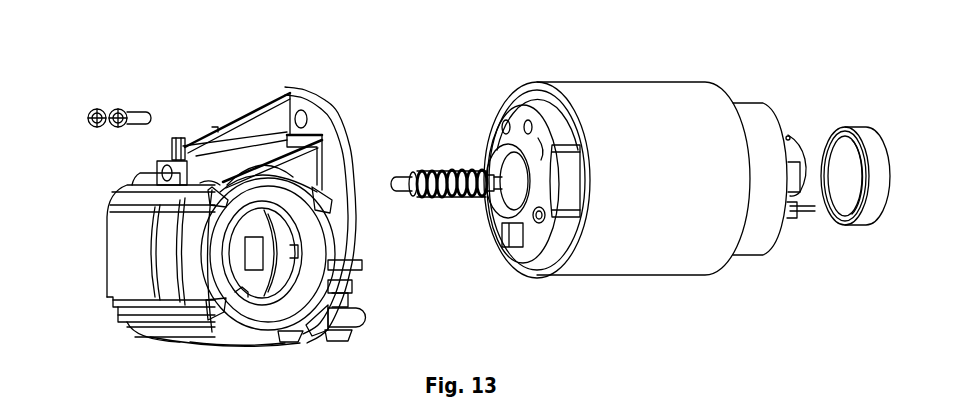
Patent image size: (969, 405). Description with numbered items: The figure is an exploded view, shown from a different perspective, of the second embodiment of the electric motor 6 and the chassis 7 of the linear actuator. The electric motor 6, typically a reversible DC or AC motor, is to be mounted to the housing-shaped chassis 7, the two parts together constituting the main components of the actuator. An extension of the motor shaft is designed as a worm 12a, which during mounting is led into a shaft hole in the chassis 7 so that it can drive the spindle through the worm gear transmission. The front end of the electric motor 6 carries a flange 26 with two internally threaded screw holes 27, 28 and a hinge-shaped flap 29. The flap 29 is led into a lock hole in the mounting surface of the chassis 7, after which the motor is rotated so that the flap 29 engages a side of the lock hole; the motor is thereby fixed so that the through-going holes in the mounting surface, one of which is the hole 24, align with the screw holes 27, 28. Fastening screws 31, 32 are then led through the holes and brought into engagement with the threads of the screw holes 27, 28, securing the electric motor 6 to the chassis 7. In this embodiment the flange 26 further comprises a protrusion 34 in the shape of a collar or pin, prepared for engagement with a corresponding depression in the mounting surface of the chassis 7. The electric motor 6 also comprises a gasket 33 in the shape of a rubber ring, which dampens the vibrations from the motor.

The electric motor 6 is at (651, 70).
The chassis 7 is at (336, 76).
The worm 12a is at (428, 197).
The through-going hole 24 is at (286, 106).
The flange 26 is at (538, 137).
The screw hole 27 is at (497, 125).
The screw hole 28 is at (526, 121).
The flap 29 is at (504, 241).
The screw 31 is at (94, 111).
The screw 32 is at (113, 131).
The gasket 33 is at (838, 130).
The protrusion 34 is at (540, 224).